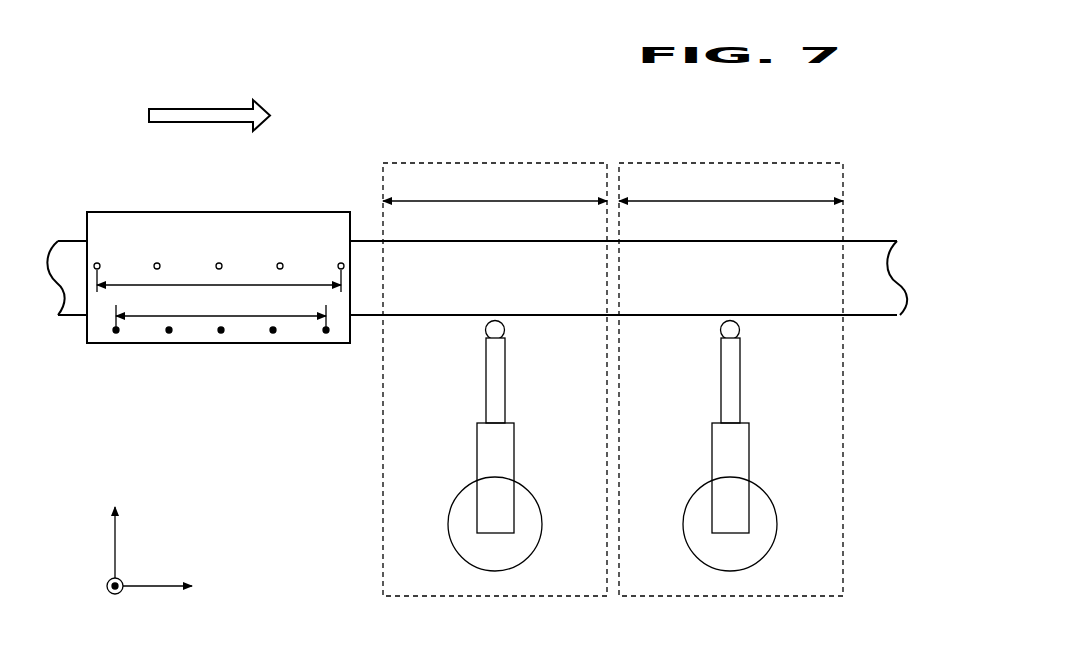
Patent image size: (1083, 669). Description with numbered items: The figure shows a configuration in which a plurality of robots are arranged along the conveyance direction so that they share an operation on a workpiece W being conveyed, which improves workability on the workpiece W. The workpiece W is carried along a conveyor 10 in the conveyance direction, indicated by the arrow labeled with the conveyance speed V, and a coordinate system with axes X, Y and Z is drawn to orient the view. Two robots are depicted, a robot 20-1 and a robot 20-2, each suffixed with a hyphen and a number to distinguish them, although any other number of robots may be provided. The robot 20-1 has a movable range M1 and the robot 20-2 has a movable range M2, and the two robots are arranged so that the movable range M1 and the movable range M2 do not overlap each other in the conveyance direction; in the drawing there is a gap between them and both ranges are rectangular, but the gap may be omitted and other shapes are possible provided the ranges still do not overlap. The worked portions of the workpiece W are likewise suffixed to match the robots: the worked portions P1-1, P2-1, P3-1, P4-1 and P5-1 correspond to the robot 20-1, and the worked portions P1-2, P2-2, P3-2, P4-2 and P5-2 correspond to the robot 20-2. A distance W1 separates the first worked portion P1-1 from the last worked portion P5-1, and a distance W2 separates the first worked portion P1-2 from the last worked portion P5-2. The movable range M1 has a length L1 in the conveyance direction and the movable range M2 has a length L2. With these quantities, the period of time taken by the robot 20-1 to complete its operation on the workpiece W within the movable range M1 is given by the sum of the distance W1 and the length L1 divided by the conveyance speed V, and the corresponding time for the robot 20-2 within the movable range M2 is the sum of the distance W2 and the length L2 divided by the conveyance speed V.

The strip / substrate being conveyed 10 is at (868, 241).
The workpiece W is at (87, 230).
The first worked portion P1-1 is at (326, 333).
The worked portion P2-1 is at (273, 333).
The worked portion P3-1 is at (221, 333).
The worked portion P4-1 is at (169, 333).
The last worked portion P5-1 is at (116, 333).
The first worked portion P1-2 is at (341, 263).
The worked portion P2-2 is at (280, 263).
The worked portion P3-2 is at (219, 263).
The worked portion P4-2 is at (157, 263).
The last worked portion P5-2 is at (97, 263).
The distance between first and last worked portions for robot 20-1 W1 is at (221, 311).
The distance between first and last worked portions for robot 20-2 W2 is at (219, 277).
The conveyance speed V is at (210, 108).
The movable range of robot 20-1 M1 is at (535, 163).
The movable range of robot 20-2 M2 is at (770, 163).
The length of movable range M1 L1 is at (495, 188).
The length of movable range M2 L2 is at (731, 188).
The robot 20-1 is at (533, 489).
The robot 20-2 is at (768, 489).
The X axis X is at (165, 600).
The Y axis Y is at (101, 535).
The Z axis Z is at (105, 595).